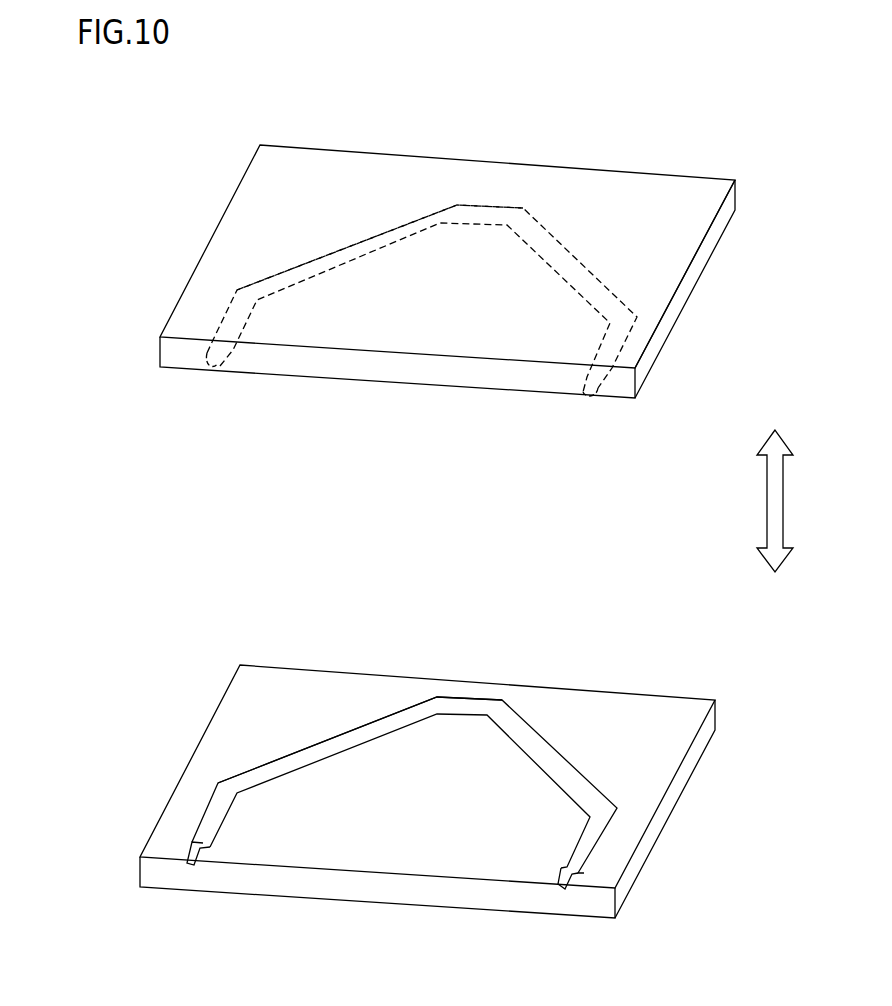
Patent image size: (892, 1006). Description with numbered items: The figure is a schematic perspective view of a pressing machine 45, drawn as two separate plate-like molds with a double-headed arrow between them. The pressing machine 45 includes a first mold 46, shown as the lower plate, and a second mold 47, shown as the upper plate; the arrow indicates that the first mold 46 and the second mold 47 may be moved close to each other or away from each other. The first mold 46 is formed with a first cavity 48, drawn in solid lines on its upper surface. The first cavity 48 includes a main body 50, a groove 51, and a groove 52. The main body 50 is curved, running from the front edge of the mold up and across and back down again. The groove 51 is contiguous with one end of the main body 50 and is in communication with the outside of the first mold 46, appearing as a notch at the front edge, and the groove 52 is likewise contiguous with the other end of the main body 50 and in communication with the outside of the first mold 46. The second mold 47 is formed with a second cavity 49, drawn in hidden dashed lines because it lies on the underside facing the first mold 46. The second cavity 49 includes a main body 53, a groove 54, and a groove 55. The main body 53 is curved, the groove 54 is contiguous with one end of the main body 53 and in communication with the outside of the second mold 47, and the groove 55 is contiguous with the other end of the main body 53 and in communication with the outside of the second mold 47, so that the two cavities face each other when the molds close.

The pressing machine 45 is at (690, 158).
The first mold 46 is at (688, 778).
The second mold 47 is at (685, 283).
The first cavity 48 is at (466, 704).
The second cavity 49 is at (488, 222).
The main body 50 is at (375, 727).
The groove 51 is at (192, 845).
The groove 52 is at (584, 873).
The main body 53 is at (398, 235).
The groove 54 is at (206, 352).
The groove 55 is at (600, 386).